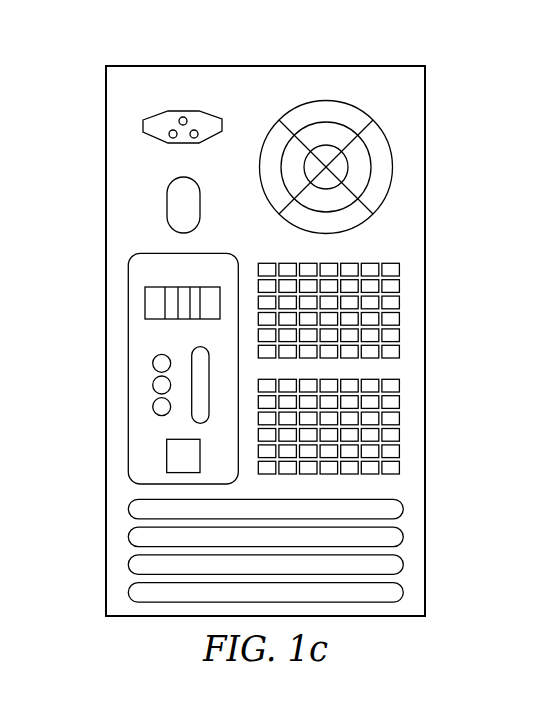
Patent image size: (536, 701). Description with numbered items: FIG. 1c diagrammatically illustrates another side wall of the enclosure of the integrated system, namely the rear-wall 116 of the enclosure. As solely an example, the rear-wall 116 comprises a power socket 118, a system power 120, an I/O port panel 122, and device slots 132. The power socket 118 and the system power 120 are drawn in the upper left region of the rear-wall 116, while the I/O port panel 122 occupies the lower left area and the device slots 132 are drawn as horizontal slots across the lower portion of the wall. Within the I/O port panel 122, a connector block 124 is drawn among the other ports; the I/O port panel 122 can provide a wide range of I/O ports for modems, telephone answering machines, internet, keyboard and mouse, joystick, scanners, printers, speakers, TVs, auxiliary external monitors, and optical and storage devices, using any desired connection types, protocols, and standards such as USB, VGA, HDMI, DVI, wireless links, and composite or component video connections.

The rear-wall 116 is at (267, 66).
The power socket 118 is at (143, 128).
The system power 120 is at (167, 205).
The I/O port panel 122 is at (140, 368).
The connector block 124 is at (145, 302).
The device slots 132 is at (128, 537).